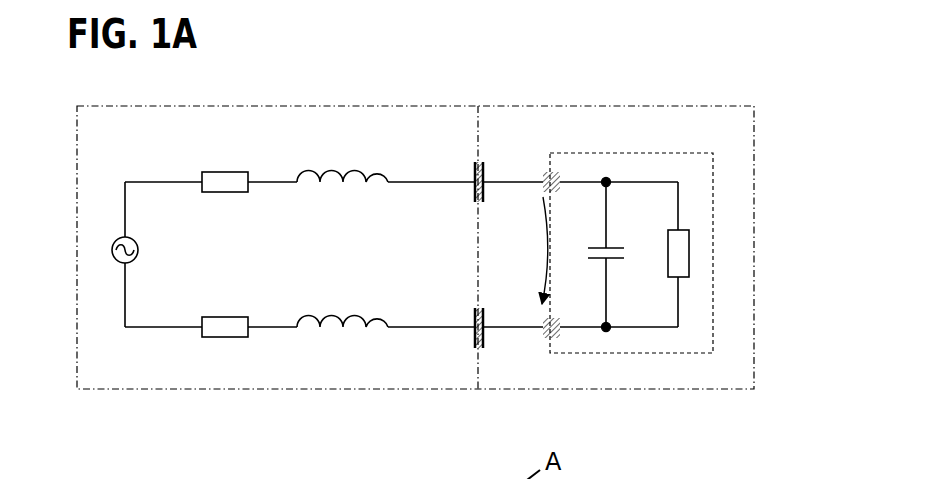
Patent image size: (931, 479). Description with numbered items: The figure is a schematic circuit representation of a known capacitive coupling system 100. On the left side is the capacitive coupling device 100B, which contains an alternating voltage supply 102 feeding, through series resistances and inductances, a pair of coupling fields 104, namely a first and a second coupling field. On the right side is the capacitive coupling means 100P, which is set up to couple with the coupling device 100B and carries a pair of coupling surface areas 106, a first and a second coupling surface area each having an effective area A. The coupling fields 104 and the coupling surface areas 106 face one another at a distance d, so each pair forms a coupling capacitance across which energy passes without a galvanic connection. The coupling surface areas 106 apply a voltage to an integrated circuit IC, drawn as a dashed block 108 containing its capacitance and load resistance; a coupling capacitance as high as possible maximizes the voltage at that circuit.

The capacitive coupling system 100 is at (716, 77).
The capacitive coupling device 100B is at (340, 107).
The capacitive coupling means 100P is at (713, 390).
The voltage supply 102 is at (115, 241).
The coupling fields 104 is at (391, 255).
The coupling surface areas 106 is at (577, 251).
The integrated circuit (IC) load 108 is at (713, 193).